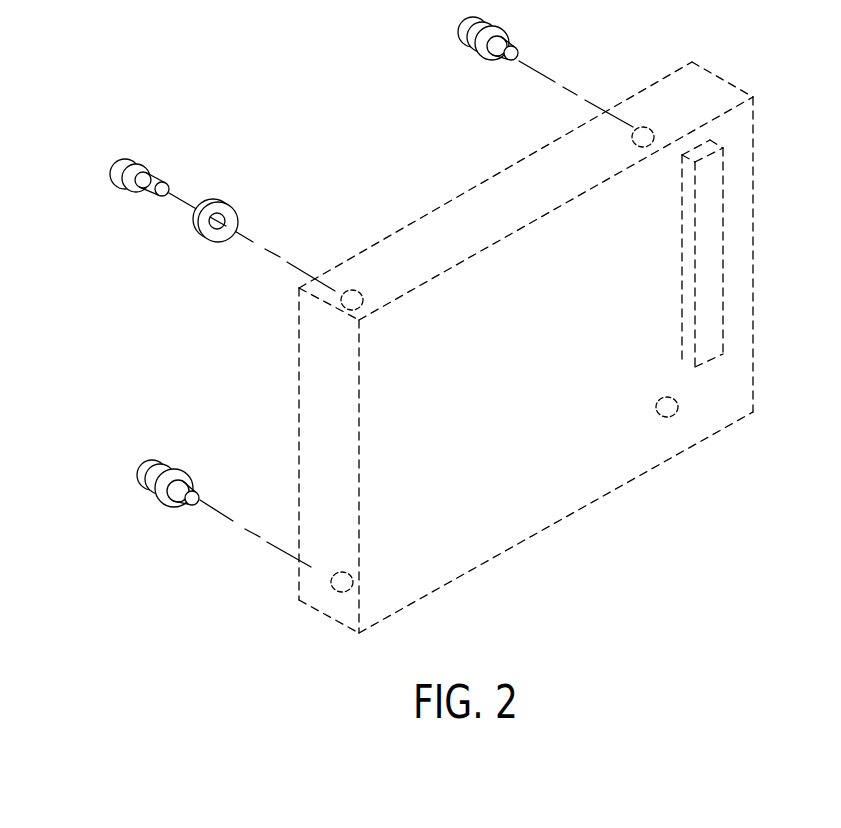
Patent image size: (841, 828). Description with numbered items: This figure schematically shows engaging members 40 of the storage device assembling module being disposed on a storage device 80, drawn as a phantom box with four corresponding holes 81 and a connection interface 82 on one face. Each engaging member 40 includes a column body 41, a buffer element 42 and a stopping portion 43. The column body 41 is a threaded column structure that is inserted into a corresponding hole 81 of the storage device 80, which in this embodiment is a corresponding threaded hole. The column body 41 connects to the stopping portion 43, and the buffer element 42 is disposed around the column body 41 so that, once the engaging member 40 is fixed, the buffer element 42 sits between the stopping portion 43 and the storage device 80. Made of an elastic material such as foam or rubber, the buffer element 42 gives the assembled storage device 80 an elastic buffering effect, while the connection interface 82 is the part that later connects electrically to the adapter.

The engaging member 40 is at (148, 458).
The column body 41 is at (158, 178).
The buffer element 42 is at (227, 205).
The stopping portion 43 is at (123, 153).
The storage device 80 is at (603, 473).
The corresponding hole 81 is at (351, 292).
The connection interface 82 is at (707, 267).